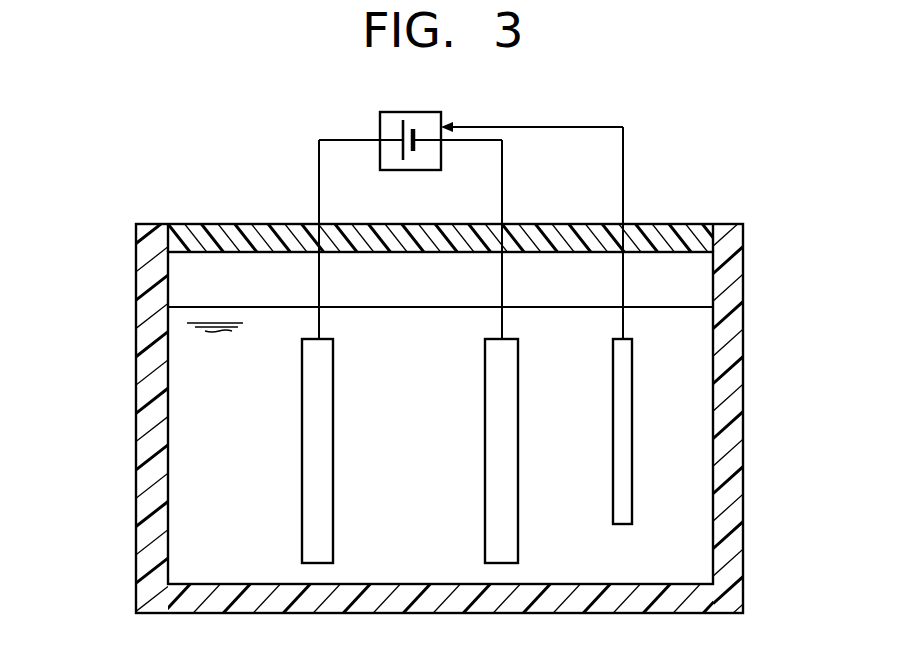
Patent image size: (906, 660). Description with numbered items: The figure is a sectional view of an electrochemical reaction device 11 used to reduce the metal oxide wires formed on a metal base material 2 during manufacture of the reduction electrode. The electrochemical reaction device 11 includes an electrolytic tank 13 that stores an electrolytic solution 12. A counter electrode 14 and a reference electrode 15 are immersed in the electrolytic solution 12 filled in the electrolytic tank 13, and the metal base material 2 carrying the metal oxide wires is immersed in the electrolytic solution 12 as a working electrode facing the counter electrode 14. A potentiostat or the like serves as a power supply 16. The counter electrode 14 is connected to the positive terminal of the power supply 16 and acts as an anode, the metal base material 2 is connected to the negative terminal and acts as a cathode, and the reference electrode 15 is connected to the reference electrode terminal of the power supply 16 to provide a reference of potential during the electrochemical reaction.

The electrochemical reaction device 11 is at (712, 128).
The electrolytic solution 12 is at (216, 425).
The electrolytic tank 13 is at (150, 363).
The counter electrode 14 is at (335, 382).
The metal base material 2 is at (519, 388).
The reference electrode 15 is at (632, 453).
The power supply 16 is at (380, 128).